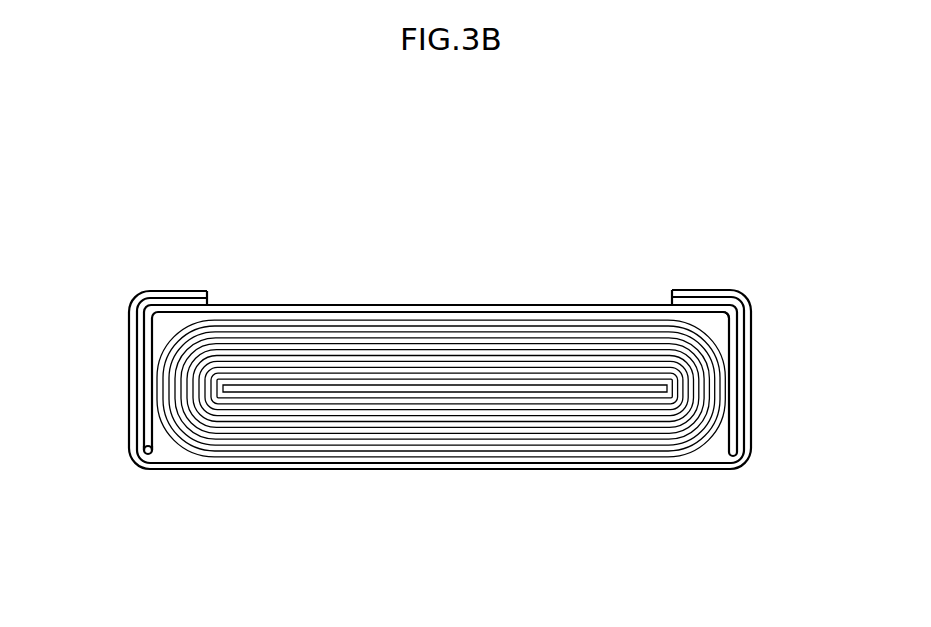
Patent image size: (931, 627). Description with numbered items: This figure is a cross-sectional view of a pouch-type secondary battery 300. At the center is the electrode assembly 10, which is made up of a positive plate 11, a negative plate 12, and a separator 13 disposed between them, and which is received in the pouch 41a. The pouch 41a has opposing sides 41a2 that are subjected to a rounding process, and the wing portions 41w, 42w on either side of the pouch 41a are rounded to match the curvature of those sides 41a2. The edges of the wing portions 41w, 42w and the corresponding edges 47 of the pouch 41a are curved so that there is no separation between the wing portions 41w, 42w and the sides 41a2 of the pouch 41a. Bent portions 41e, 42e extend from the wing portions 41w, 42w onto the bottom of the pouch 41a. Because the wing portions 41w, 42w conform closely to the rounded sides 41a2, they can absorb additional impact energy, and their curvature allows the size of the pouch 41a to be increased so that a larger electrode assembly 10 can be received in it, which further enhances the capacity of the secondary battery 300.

The pouch-type secondary battery 300 is at (67, 102).
The electrode assembly 10 is at (397, 228).
The positive plate 11 is at (283, 317).
The negative plate 12 is at (389, 318).
The separator 13 is at (323, 317).
The bent portion 41e is at (145, 303).
The wing portion 41w is at (137, 368).
The side of the pouch 41a2 is at (150, 397).
The pouch 41a is at (170, 482).
The bent portion 42e is at (690, 288).
The wing portion 42w is at (752, 347).
The edge of the pouch 47 is at (720, 316).